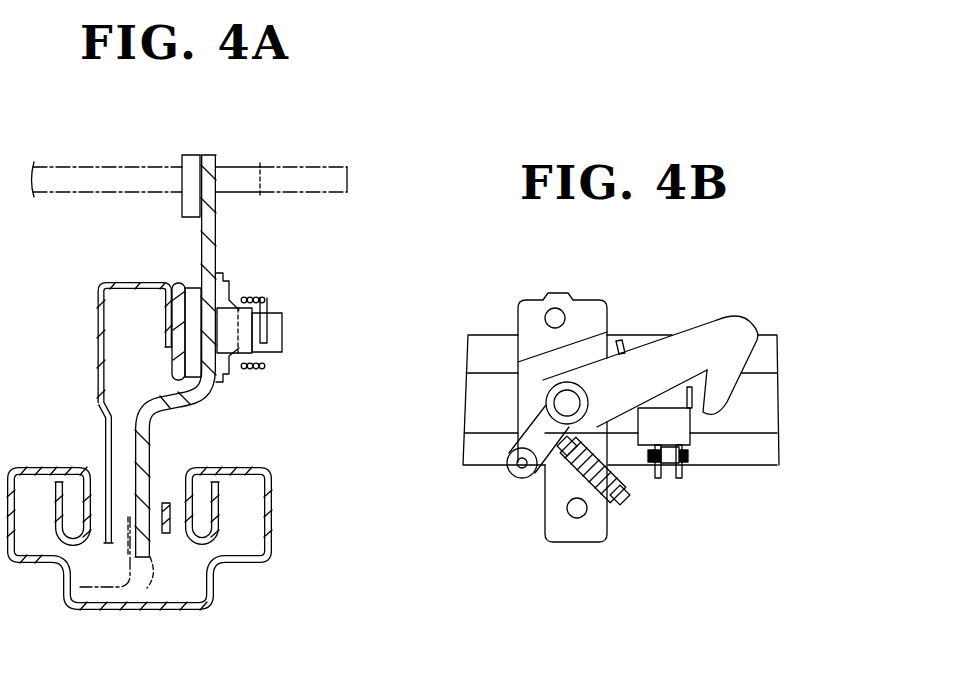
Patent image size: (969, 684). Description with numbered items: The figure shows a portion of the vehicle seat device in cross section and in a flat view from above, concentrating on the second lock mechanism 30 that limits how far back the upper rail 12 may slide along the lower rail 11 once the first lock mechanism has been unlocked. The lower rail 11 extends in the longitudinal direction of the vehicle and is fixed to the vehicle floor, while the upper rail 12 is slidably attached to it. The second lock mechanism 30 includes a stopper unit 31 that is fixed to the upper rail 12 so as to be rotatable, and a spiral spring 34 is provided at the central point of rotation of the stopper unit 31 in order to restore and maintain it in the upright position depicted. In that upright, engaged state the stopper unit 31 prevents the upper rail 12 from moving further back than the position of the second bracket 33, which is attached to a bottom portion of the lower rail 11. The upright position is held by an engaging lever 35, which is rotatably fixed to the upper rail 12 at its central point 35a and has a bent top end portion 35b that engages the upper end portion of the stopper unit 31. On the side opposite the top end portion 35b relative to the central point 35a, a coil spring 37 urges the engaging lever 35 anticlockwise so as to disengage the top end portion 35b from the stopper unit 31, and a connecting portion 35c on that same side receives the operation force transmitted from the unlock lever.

In FIG. 4A, the lower rail 11 is at (37, 467).
In FIG. 4B, the lower rail 11 is at (768, 335).
In FIG. 4A, the upper rail 12 is at (125, 283).
In FIG. 4B, the upper rail 12 is at (480, 371).
In FIG. 4A, the second lock mechanism 30 is at (285, 298).
In FIG. 4A, the stopper unit 31 is at (186, 410).
In FIG. 4B, the stopper unit 31 is at (640, 418).
In FIG. 4A, the second bracket 33 is at (152, 608).
In FIG. 4A, the spiral spring 34 is at (250, 372).
In FIG. 4B, the spiral spring 34 is at (693, 467).
In FIG. 4A, the engaging lever 35 is at (268, 165).
In FIG. 4B, the engaging lever 35 is at (625, 402).
In FIG. 4B, the central point 35a is at (547, 403).
In FIG. 4B, the top end portion 35b is at (742, 387).
In FIG. 4B, the connecting portion 35c is at (512, 476).
In FIG. 4B, the coil spring 37 is at (628, 477).